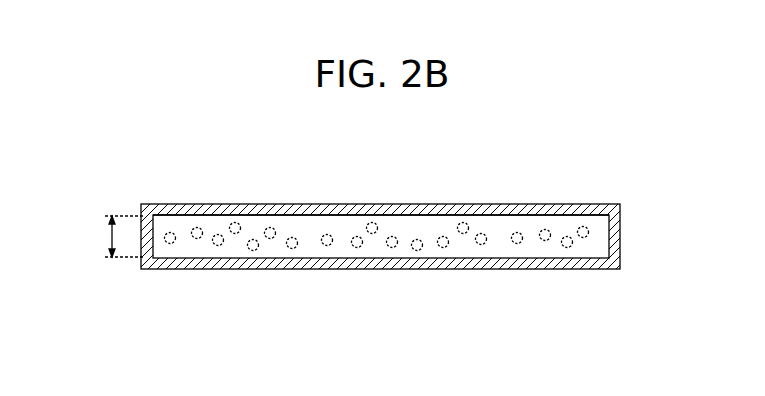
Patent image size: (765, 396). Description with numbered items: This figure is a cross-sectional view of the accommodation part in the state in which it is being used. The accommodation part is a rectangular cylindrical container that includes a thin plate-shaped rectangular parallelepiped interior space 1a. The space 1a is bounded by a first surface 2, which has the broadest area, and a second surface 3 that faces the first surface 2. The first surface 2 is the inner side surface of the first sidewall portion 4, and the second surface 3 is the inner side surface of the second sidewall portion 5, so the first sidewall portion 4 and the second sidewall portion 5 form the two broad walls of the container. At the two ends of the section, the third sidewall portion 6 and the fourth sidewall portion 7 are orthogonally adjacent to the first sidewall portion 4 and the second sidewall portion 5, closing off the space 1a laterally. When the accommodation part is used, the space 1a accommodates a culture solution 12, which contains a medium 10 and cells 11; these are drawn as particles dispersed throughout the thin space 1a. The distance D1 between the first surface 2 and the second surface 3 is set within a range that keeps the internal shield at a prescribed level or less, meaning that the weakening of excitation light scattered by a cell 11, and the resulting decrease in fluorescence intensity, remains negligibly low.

The interior space 1a is at (318, 212).
The first surface 2 is at (229, 259).
The second surface 3 is at (244, 211).
The first sidewall portion 4 is at (393, 265).
The second sidewall portion 5 is at (395, 208).
The third sidewall portion 6 is at (621, 238).
The fourth sidewall portion 7 is at (145, 232).
The medium 10 is at (466, 222).
The cell 11 is at (499, 203).
The culture solution 12 is at (377, 184).
The distance D1 is at (108, 236).